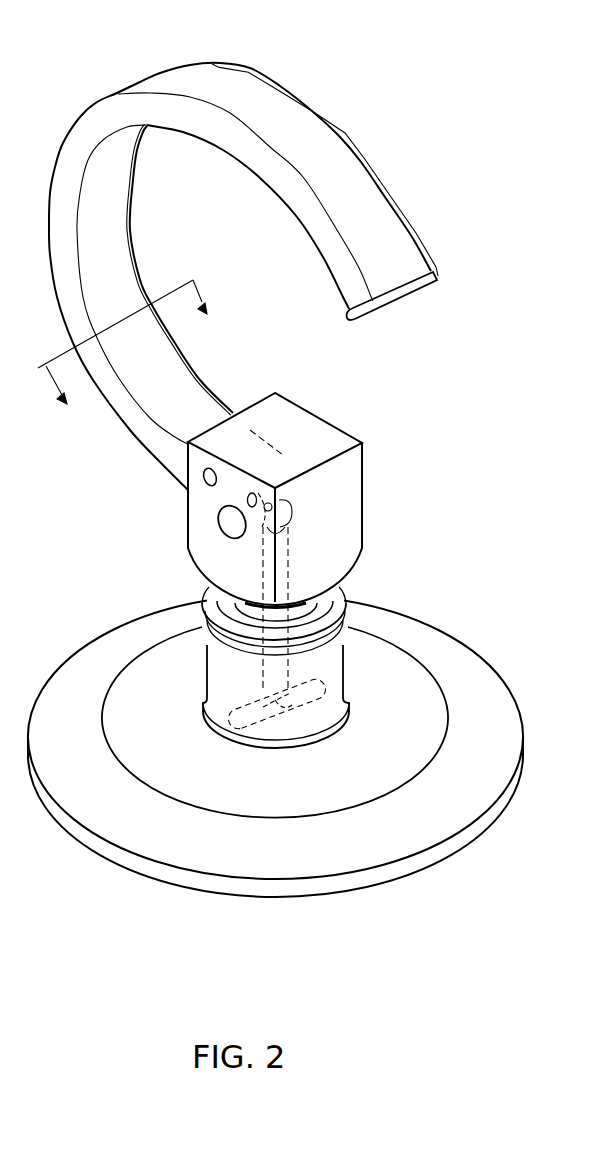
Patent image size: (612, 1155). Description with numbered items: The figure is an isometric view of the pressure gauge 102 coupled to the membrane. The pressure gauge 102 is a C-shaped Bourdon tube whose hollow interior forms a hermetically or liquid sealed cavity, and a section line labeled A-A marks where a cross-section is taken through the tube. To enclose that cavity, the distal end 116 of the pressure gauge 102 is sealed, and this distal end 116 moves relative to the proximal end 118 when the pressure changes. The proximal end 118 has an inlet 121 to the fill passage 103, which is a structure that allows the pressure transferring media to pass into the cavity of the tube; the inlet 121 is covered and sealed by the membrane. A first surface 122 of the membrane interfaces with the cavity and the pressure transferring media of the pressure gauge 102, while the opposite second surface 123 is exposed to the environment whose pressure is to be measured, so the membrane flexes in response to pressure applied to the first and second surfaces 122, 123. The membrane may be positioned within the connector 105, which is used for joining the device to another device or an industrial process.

The pressure gauge 102 is at (237, 87).
The distal end 116 is at (437, 273).
The fill passage 103 is at (290, 555).
The inlet 121 is at (280, 468).
The proximal end 118 is at (245, 497).
The first surface 122 is at (262, 706).
The second surface 123 is at (308, 700).
The connector 105 is at (110, 852).